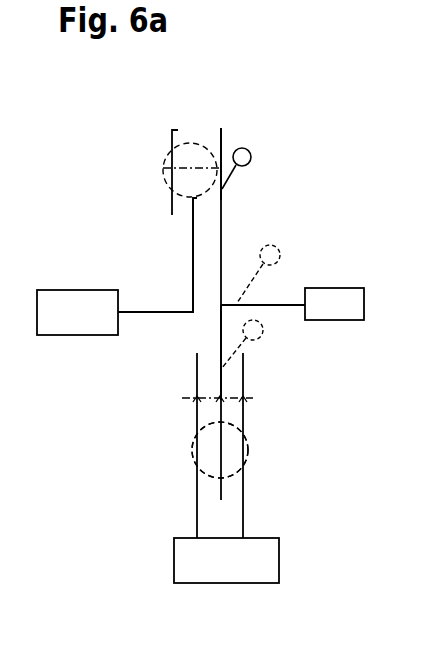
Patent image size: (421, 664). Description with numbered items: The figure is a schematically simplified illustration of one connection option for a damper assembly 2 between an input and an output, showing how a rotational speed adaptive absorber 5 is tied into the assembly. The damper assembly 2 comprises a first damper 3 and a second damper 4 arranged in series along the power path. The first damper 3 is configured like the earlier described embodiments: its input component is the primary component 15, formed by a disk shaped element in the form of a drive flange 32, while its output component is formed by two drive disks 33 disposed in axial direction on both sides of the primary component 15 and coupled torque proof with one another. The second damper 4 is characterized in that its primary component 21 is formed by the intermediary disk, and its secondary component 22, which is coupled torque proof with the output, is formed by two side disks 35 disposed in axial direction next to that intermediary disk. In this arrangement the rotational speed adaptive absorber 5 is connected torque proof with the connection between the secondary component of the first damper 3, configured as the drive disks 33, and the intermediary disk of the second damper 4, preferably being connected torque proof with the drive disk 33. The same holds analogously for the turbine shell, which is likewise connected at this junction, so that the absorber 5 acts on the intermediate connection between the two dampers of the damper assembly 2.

The damper assembly 2 is at (292, 161).
The first damper 3 is at (170, 118).
The second damper 4 is at (246, 512).
The rotational speed adaptive absorber 5 is at (249, 150).
The primary component 15 is at (148, 311).
The primary component 21 is at (219, 337).
The secondary component 22 is at (246, 477).
The drive flange 32 is at (155, 255).
The drive disks 33 is at (221, 140).
The side disks 35 is at (220, 450).